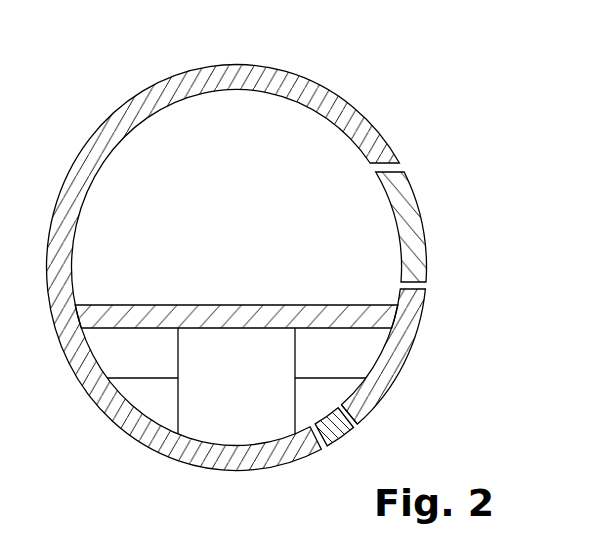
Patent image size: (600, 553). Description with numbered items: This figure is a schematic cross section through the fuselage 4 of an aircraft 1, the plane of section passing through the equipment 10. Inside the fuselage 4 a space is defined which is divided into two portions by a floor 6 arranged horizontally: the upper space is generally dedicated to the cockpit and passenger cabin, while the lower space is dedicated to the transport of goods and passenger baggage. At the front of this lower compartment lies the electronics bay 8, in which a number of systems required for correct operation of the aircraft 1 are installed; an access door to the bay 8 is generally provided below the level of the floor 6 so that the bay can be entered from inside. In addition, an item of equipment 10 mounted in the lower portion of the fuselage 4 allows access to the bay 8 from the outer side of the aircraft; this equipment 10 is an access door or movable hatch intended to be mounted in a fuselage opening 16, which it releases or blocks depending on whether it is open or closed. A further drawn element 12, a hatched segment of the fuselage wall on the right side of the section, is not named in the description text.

The aircraft 1 is at (400, 98).
The fuselage 4 is at (283, 69).
The floor 6 is at (158, 298).
The electronics bay 8 is at (236, 381).
The item of equipment 10 is at (338, 452).
The wall segment 12 is at (407, 213).
The fuselage opening 16 is at (349, 431).